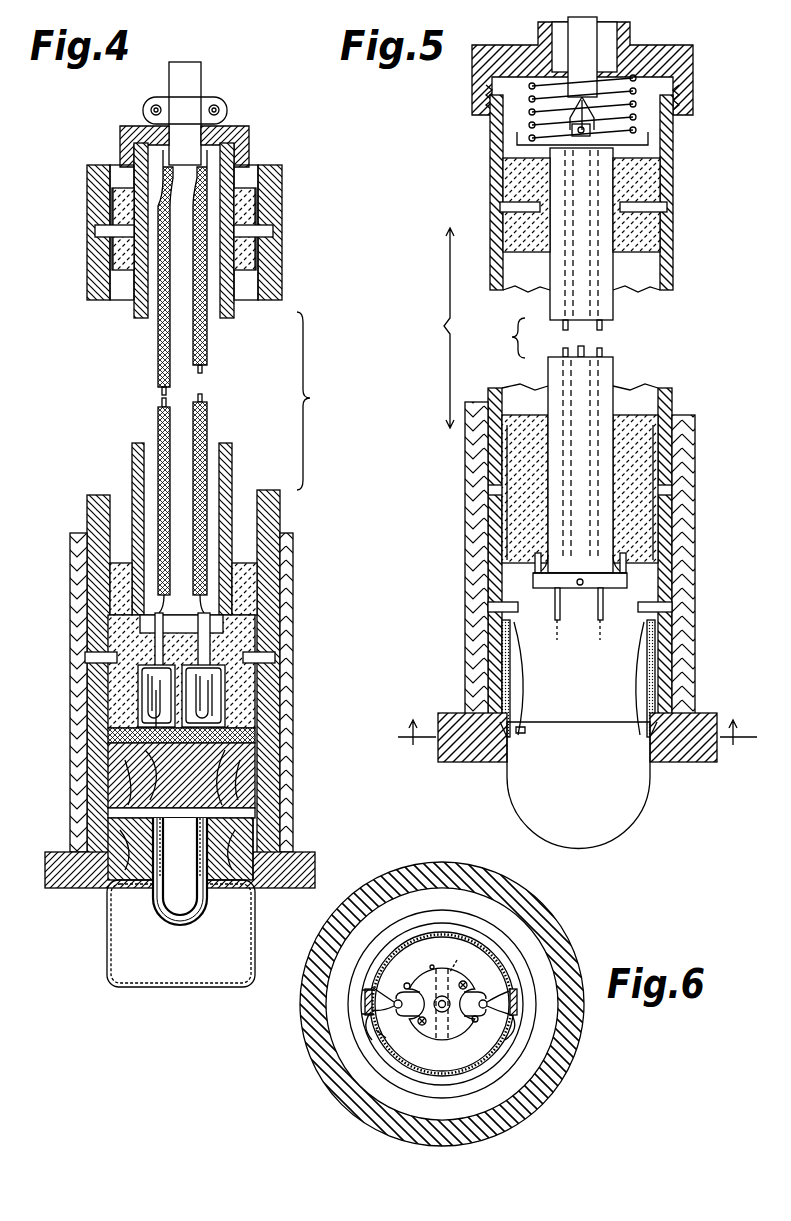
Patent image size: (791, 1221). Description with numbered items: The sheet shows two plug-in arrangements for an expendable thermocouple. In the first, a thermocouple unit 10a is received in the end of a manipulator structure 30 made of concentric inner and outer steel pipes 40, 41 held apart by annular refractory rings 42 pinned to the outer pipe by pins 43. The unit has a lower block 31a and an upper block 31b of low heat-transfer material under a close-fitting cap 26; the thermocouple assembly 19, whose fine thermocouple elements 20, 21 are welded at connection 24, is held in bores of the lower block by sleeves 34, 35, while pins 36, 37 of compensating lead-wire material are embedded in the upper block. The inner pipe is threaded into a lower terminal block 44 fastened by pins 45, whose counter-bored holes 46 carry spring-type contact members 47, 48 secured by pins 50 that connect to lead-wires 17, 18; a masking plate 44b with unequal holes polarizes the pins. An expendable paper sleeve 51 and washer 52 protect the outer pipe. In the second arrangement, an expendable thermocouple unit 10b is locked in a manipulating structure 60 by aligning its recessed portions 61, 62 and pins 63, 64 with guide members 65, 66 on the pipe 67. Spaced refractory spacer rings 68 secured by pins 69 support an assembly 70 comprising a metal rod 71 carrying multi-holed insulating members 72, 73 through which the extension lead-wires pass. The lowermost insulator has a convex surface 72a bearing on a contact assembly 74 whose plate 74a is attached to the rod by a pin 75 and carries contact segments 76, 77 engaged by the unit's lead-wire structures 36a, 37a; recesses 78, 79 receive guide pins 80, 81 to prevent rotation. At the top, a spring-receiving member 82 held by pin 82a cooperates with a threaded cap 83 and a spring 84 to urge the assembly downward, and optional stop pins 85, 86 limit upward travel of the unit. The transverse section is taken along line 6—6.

In FIG. 4, the thermocouple unit 10a is at (302, 922).
In FIG. 5, the expendable thermocouple unit 10b is at (645, 808).
In FIG. 6, the expendable thermocouple unit 10b is at (503, 1037).
In FIG. 4, the lead-wire structure 17 is at (203, 373).
In FIG. 5, the lead-wire structure 17 is at (602, 333).
In FIG. 6, the lead-wire structure 17 is at (407, 983).
In FIG. 4, the lead-wire structure 18 is at (161, 390).
In FIG. 5, the lead-wire structure 18 is at (563, 331).
In FIG. 6, the lead-wire structure 18 is at (475, 1022).
In FIG. 4, the thermocouple assembly 19 is at (149, 968).
In FIG. 4, the thermocouple element 20 is at (165, 918).
In FIG. 4, the thermocouple element 21 is at (194, 925).
In FIG. 4, the welded electrical connection 24 is at (148, 813).
In FIG. 4, the cap 26 is at (177, 988).
In FIG. 4, the manipulator structure 30 is at (312, 408).
In FIG. 4, the lower block 31a is at (98, 883).
In FIG. 4, the upper block 31b is at (113, 770).
In FIG. 4, the sleeve 34 is at (142, 880).
In FIG. 4, the sleeve 35 is at (218, 880).
In FIG. 4, the pin 36 is at (158, 757).
In FIG. 4, the pin 37 is at (205, 755).
In FIG. 5, the compensating lead-wire structure 36a is at (557, 624).
In FIG. 6, the compensating lead-wire structure 36a is at (433, 1040).
In FIG. 5, the compensating lead-wire structure 37a is at (600, 622).
In FIG. 6, the compensating lead-wire structure 37a is at (466, 984).
In FIG. 4, the inner pipe 40 is at (230, 323).
In FIG. 4, the outer pipe 41 is at (275, 267).
In FIG. 4, the annular refractory ring 42 is at (247, 215).
In FIG. 4, the pin 43 is at (263, 230).
In FIG. 4, the lower terminal block 44 is at (243, 598).
In FIG. 4, the masking plate 44b is at (252, 735).
In FIG. 4, the pin 45 is at (92, 658).
In FIG. 4, the counter-bored hole 46 is at (140, 727).
In FIG. 4, the spring-type contact member 47 is at (143, 698).
In FIG. 4, the spring-type contact member 48 is at (212, 675).
In FIG. 4, the pin 50 is at (158, 628).
In FIG. 4, the sleeve 51 is at (293, 772).
In FIG. 5, the sleeve 51 is at (472, 697).
In FIG. 6, the sleeve 51 is at (517, 920).
In FIG. 4, the washer 52 is at (47, 868).
In FIG. 5, the washer 52 is at (453, 762).
In FIG. 6, the washer 52 is at (558, 932).
In FIG. 5, the manipulating structure 60 is at (411, 345).
In FIG. 5, the recessed portion 61 is at (652, 688).
In FIG. 5, the recessed portion 62 is at (503, 680).
In FIG. 5, the pin 63 is at (520, 732).
In FIG. 6, the pin 63 is at (380, 1035).
In FIG. 6, the pin 64 is at (372, 990).
In FIG. 5, the guide member 65 is at (497, 763).
In FIG. 6, the guide member 65 is at (370, 1008).
In FIG. 5, the guide member 66 is at (660, 763).
In FIG. 6, the guide member 66 is at (516, 1000).
In FIG. 5, the pipe 67 is at (667, 657).
In FIG. 6, the pipe 67 is at (458, 917).
In FIG. 5, the spacer ring 68 is at (673, 232).
In FIG. 5, the pin 69 is at (503, 207).
In FIG. 5, the assembly 70 is at (491, 340).
In FIG. 5, the metal rod 71 is at (597, 357).
In FIG. 5, the insulating member 72 is at (548, 383).
In FIG. 5, the convex surface 72a is at (547, 581).
In FIG. 5, the insulating member 73 is at (550, 297).
In FIG. 6, the contact assembly 74 is at (429, 1068).
In FIG. 5, the plate 74a is at (533, 583).
In FIG. 6, the plate 74a is at (432, 966).
In FIG. 6, the pin 75 is at (464, 958).
In FIG. 5, the contact segment 76 is at (555, 620).
In FIG. 6, the contact segment 76 is at (420, 1023).
In FIG. 5, the contact segment 77 is at (603, 603).
In FIG. 6, the contact segment 77 is at (467, 987).
In FIG. 6, the recess 78 is at (498, 1021).
In FIG. 6, the recess 79 is at (397, 1016).
In FIG. 5, the guide pin 80 is at (623, 560).
In FIG. 6, the guide pin 80 is at (488, 1004).
In FIG. 5, the guide pin 81 is at (537, 558).
In FIG. 6, the guide pin 81 is at (393, 1003).
In FIG. 5, the spring-receiving member 82 is at (648, 140).
In FIG. 5, the pin 82a is at (567, 127).
In FIG. 5, the cap 83 is at (693, 75).
In FIG. 5, the spring 84 is at (540, 100).
In FIG. 5, the stop pin 85 is at (488, 607).
In FIG. 5, the stop pin 86 is at (672, 605).
In FIG. 5, the section line 6— 6 is at (572, 736).